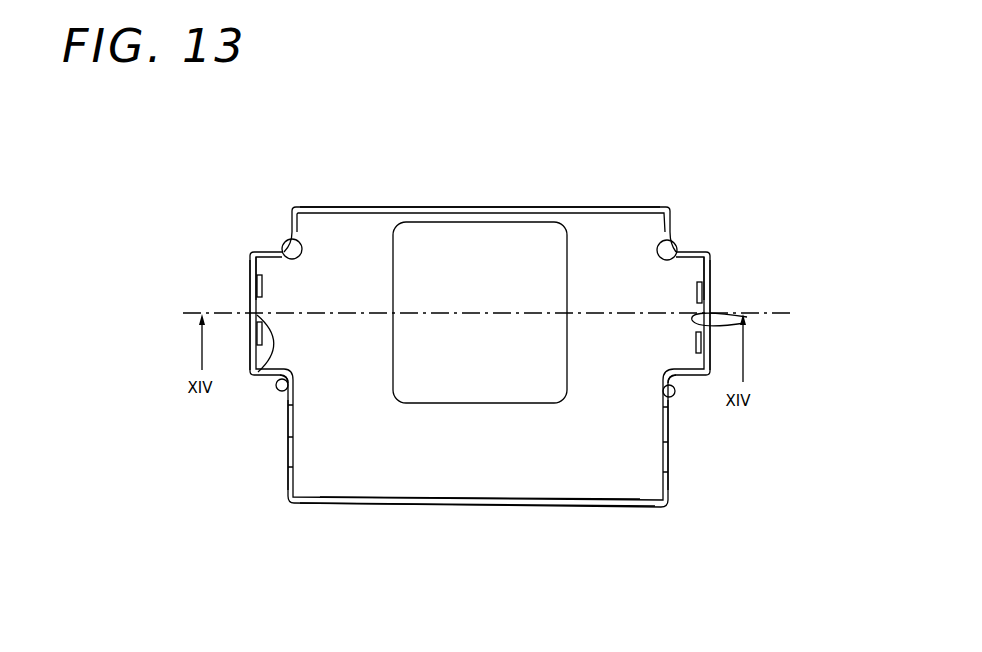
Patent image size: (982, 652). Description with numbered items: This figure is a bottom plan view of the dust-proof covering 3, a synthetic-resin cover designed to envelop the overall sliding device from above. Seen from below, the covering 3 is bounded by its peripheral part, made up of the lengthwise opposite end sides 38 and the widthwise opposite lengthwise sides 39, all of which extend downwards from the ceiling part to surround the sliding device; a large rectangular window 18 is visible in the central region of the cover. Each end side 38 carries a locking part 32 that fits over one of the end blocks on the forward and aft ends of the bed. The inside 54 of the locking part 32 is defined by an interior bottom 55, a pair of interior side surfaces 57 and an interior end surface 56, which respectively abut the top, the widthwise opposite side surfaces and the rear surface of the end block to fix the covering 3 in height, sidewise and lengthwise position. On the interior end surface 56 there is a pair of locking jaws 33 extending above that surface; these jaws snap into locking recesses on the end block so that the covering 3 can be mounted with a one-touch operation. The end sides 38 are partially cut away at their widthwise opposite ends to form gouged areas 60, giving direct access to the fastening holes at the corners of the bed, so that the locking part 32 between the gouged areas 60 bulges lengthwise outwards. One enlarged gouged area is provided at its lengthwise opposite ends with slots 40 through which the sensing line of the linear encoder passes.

The dust-proof covering 3 is at (549, 203).
The window opening 18 is at (500, 253).
The locking part 32 is at (268, 265).
The locking jaw 33 is at (258, 333).
The end side 38 is at (252, 281).
The lengthwise side 39 is at (379, 206).
The slot 40 is at (286, 452).
The inside of the locking part 54 is at (437, 468).
The interior bottom 55 is at (278, 358).
The interior end surface 56 is at (266, 376).
The interior side surface 57 is at (291, 238).
The gouged area 60 is at (288, 242).